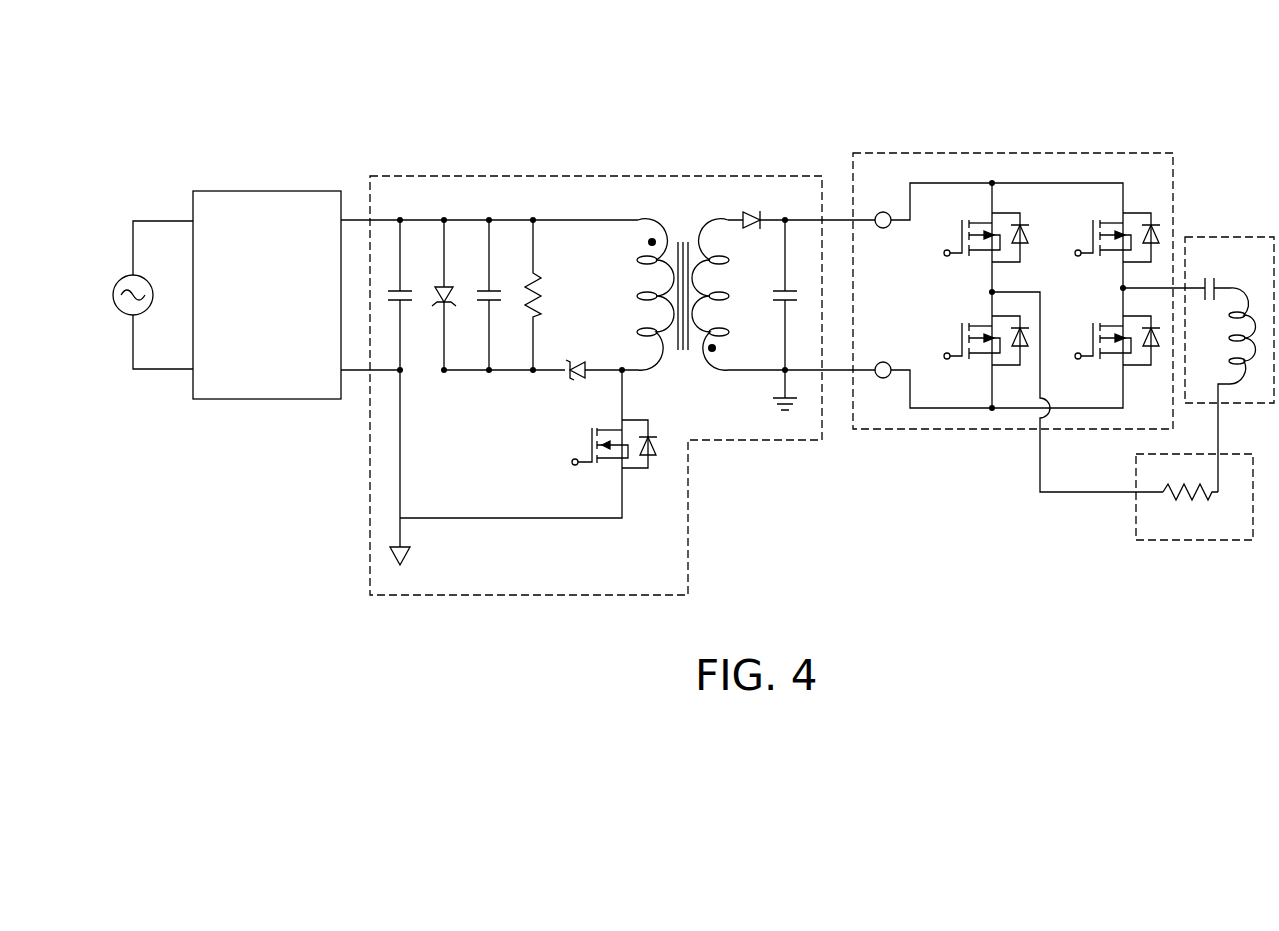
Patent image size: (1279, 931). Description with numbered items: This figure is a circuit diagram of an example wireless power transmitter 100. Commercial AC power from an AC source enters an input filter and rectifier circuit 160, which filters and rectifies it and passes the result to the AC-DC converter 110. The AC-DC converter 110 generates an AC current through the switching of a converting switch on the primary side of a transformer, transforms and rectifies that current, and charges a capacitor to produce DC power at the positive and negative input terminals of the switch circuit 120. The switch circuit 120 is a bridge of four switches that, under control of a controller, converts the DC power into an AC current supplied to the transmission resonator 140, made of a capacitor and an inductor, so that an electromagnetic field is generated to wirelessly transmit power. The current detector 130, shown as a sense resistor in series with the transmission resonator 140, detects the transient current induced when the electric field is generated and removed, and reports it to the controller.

The wireless power transmitter 100 is at (601, 66).
The AC-DC converter 110 is at (525, 176).
The switch circuit 120 is at (1123, 153).
The current detector 130 is at (1194, 540).
The transmission resonator 140 is at (1242, 237).
The input filter and rectifier circuit 160 is at (285, 191).